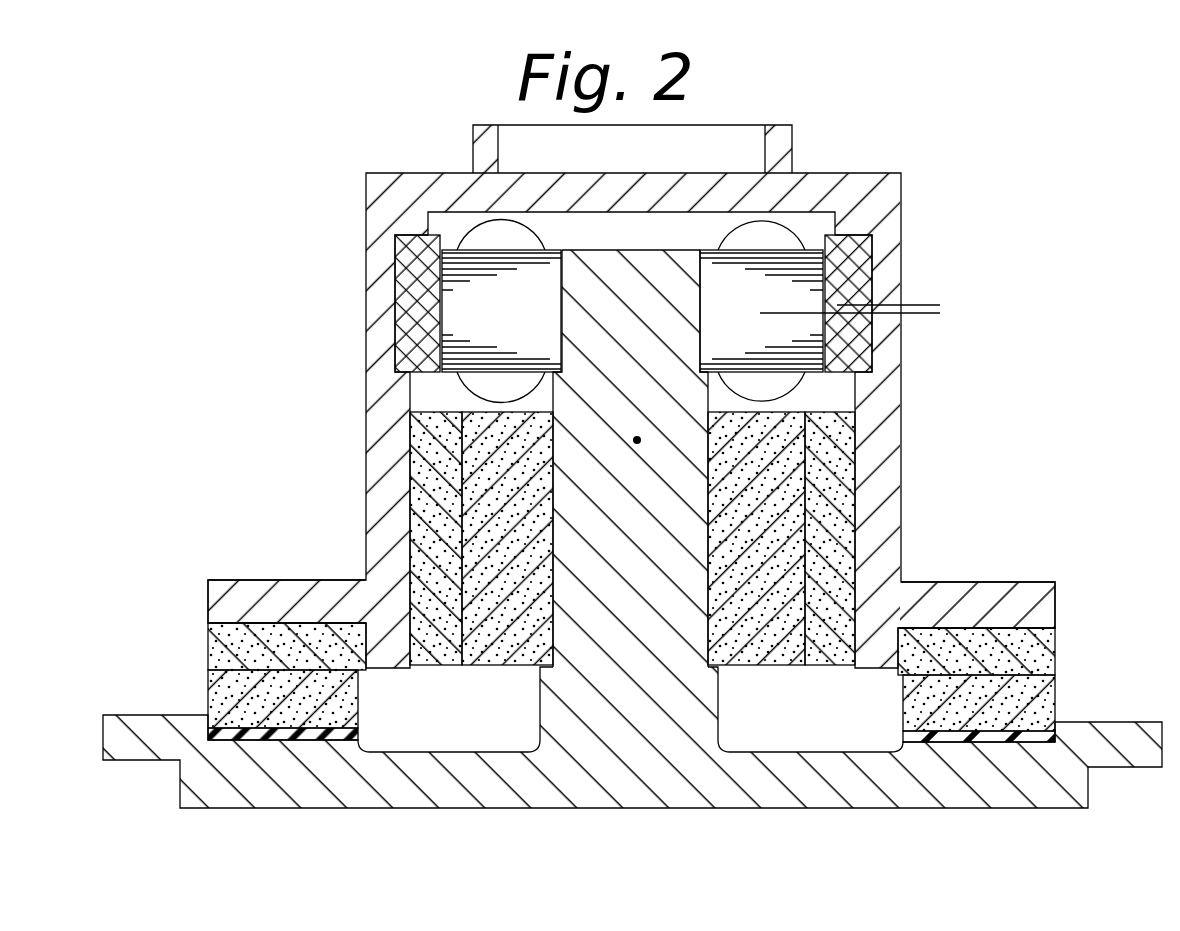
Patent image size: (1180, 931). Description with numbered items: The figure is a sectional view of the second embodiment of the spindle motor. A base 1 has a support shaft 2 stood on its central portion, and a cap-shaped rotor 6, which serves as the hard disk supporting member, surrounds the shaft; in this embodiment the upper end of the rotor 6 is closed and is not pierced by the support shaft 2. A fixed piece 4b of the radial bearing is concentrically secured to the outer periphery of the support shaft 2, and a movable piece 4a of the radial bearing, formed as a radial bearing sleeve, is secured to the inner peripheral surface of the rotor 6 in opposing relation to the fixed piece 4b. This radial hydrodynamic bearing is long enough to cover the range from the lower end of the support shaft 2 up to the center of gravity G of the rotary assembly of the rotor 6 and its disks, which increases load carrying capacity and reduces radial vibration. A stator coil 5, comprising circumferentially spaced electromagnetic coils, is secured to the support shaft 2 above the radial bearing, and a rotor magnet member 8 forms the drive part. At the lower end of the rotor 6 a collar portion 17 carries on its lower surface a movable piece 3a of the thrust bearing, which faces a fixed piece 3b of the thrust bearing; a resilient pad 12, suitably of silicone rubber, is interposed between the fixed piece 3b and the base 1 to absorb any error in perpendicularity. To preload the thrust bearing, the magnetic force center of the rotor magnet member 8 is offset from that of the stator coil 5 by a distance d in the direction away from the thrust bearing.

The base 1 is at (360, 790).
The support shaft 2 is at (635, 575).
The movable piece of the thrust bearing 3a is at (1032, 652).
The fixed piece of the thrust bearing 3b is at (1032, 693).
The movable piece of the radial bearing 4a is at (843, 503).
The fixed piece of the radial bearing 4b is at (767, 520).
The stator coil 5 is at (450, 290).
The rotor 6 is at (433, 193).
The rotor magnet member 8 is at (405, 318).
The resilient pad 12 is at (1000, 740).
The collar portion 17 is at (1037, 605).
The center of gravity G is at (641, 440).
The distance d is at (928, 282).